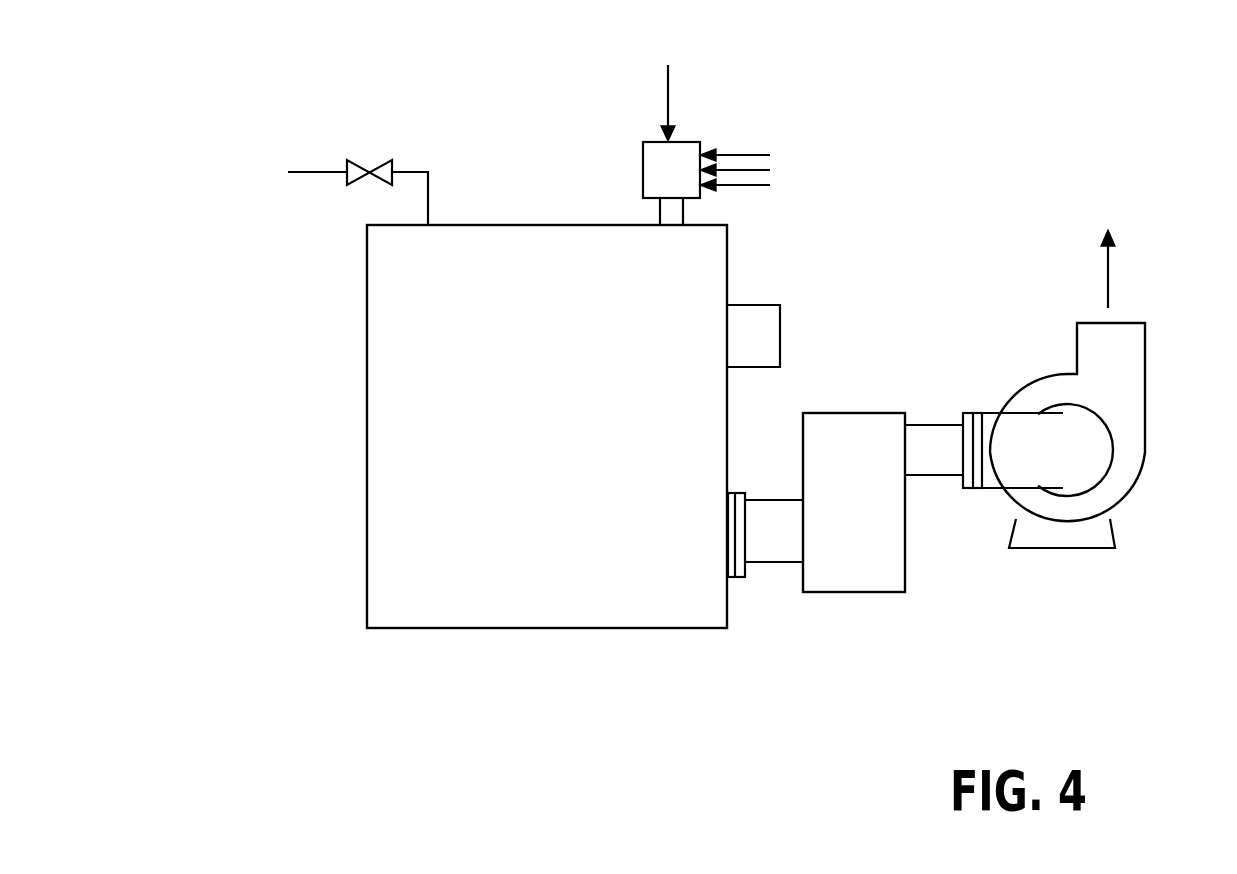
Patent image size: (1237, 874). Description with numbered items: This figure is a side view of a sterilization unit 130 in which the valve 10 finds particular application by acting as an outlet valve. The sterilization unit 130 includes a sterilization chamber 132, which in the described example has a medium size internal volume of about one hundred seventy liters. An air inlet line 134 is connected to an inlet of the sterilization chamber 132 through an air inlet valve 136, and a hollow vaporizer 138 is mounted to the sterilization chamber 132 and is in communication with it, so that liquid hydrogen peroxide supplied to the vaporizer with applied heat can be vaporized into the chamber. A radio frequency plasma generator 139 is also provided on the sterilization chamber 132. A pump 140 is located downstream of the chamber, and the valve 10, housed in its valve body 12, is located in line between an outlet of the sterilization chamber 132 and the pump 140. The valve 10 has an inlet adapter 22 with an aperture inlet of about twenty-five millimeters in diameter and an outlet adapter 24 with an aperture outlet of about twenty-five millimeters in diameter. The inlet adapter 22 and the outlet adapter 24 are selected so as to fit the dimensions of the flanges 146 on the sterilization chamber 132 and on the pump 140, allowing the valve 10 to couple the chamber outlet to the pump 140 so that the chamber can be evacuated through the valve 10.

The valve 10 is at (857, 368).
The chamber housing 12 is at (860, 592).
The inlet adapter 22 is at (773, 560).
The outlet adapter 24 is at (942, 475).
The sterilization unit 130 is at (486, 121).
The sterilization chamber 132 is at (727, 258).
The air inlet line 134 is at (315, 170).
The air inlet valve 136 is at (389, 158).
The hollow vaporizer 138 is at (643, 170).
The radio frequency (RF) plasma generator 139 is at (780, 330).
The pump 140 is at (1113, 490).
The flanges 146 is at (735, 493).